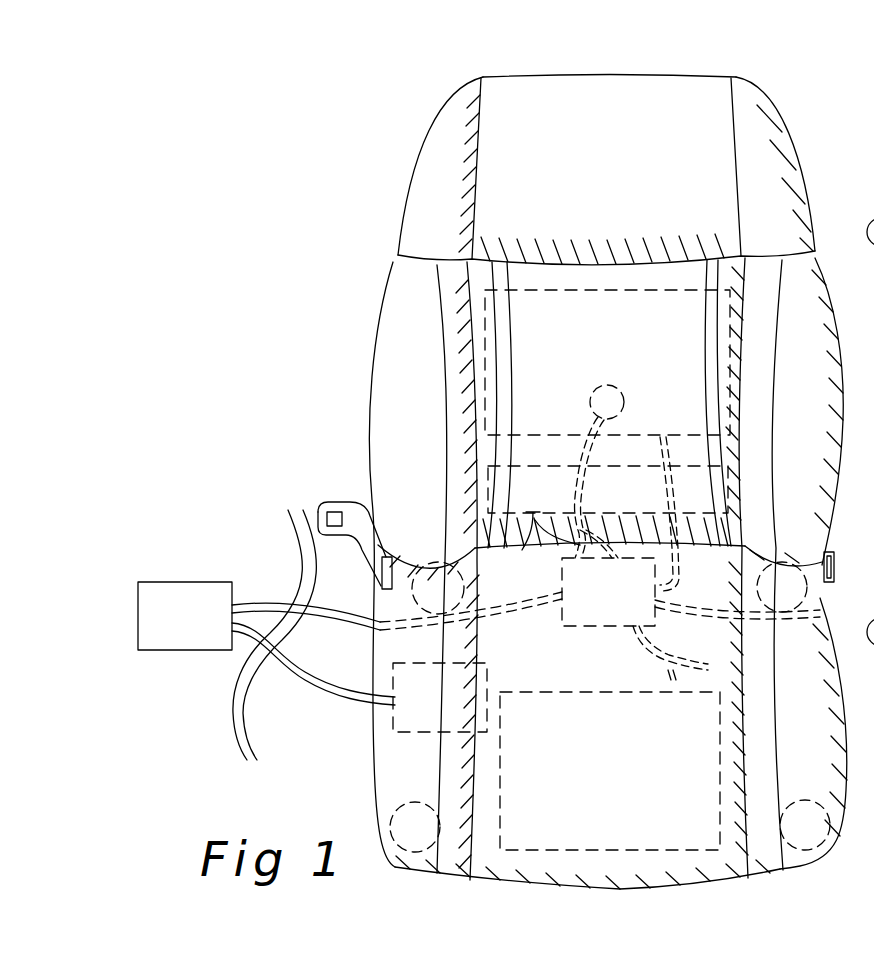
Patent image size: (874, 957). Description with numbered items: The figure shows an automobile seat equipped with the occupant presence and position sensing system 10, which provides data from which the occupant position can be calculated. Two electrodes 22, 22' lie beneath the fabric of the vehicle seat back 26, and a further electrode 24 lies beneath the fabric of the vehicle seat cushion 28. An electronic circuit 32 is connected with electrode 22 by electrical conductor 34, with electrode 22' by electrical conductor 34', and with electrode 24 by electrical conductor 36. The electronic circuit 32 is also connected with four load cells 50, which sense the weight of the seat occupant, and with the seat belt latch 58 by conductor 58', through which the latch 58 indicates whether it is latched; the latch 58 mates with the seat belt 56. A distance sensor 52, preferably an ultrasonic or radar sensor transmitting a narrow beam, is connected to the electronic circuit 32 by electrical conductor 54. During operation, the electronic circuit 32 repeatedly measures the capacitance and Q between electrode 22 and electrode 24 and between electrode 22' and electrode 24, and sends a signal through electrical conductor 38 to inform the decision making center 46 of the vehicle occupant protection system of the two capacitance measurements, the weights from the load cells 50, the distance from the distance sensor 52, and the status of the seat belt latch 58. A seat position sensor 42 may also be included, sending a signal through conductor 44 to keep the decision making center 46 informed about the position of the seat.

The occupant presence and position sensing system 10 is at (370, 170).
The electrode 22 is at (607, 362).
The electrode 22' is at (608, 489).
The electrode 24 is at (624, 754).
The vehicle seat back 26 is at (374, 413).
The vehicle seat cushion 28 is at (380, 656).
The electronic circuit 32 is at (625, 628).
The electrical conductor 34 is at (737, 502).
The electrical conductor 34' is at (545, 543).
The electrical conductor 36 is at (685, 655).
The electrical conductor 38 is at (517, 605).
The seat position sensor 42 is at (447, 706).
The conductor 44 is at (368, 705).
The decision making center 46 is at (195, 620).
The load cells 50 is at (441, 599).
The distance sensor 52 is at (590, 404).
The electrical conductor 54 is at (572, 457).
The seat belt 56 is at (332, 500).
The seat belt latch 58 is at (848, 542).
The conductor 58' is at (737, 647).